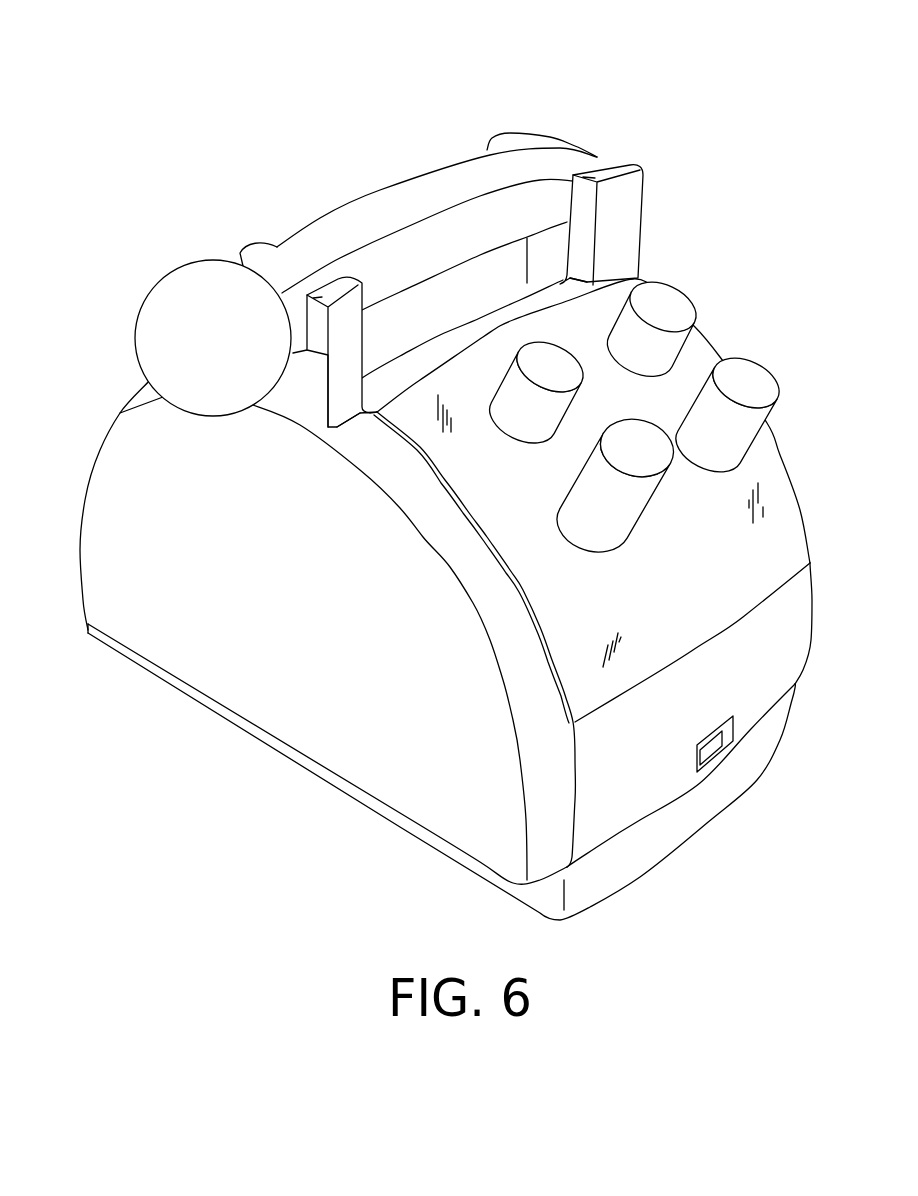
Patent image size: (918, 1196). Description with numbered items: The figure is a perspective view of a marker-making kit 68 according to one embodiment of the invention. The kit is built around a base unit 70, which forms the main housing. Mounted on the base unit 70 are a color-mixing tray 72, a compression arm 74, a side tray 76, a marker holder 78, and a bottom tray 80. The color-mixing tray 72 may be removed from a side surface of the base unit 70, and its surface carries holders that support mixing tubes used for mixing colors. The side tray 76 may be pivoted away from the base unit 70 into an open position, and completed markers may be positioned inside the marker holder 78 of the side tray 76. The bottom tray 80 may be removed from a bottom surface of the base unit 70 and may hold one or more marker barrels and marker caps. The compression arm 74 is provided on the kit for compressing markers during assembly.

The marker-making kit 68 is at (86, 83).
The base unit 70 is at (623, 214).
The color-mixing tray 72 is at (104, 472).
The compression arm 74 is at (385, 203).
The side tray 76 is at (774, 468).
The marker holder 78 is at (672, 297).
The bottom tray 80 is at (693, 812).